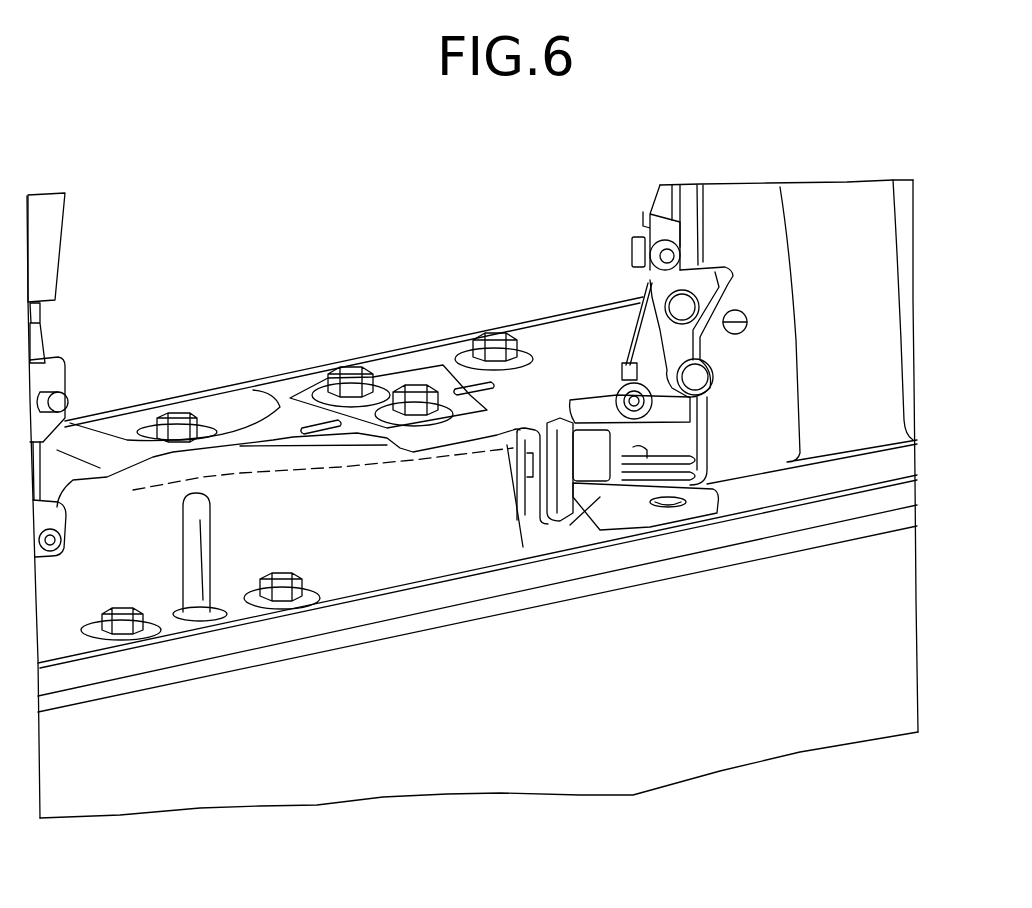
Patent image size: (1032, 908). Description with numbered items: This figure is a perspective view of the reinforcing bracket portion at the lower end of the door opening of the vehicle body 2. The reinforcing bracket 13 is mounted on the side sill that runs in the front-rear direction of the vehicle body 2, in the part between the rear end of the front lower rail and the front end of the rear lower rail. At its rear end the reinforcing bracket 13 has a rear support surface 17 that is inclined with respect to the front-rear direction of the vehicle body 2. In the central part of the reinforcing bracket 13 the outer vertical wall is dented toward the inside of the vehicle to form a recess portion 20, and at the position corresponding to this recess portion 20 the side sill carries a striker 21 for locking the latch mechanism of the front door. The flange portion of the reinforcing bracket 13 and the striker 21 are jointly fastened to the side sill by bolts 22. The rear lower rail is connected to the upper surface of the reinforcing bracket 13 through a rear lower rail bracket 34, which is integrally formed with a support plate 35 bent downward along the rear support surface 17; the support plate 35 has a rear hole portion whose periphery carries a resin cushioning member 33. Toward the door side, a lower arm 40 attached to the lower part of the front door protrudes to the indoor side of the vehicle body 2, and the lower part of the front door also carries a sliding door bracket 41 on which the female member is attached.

The vehicle body 2 is at (447, 762).
The reinforcing bracket 13 is at (297, 477).
The rear support surface 17 is at (517, 460).
The recess portion 20 is at (240, 507).
The striker 21 is at (190, 520).
The bolts 22 is at (117, 627).
The cushioning member 33 is at (627, 490).
The rear lower rail bracket 34 is at (608, 352).
The support plate 35 is at (560, 460).
The lower arm 40 is at (640, 493).
The sliding door bracket 41 is at (753, 277).